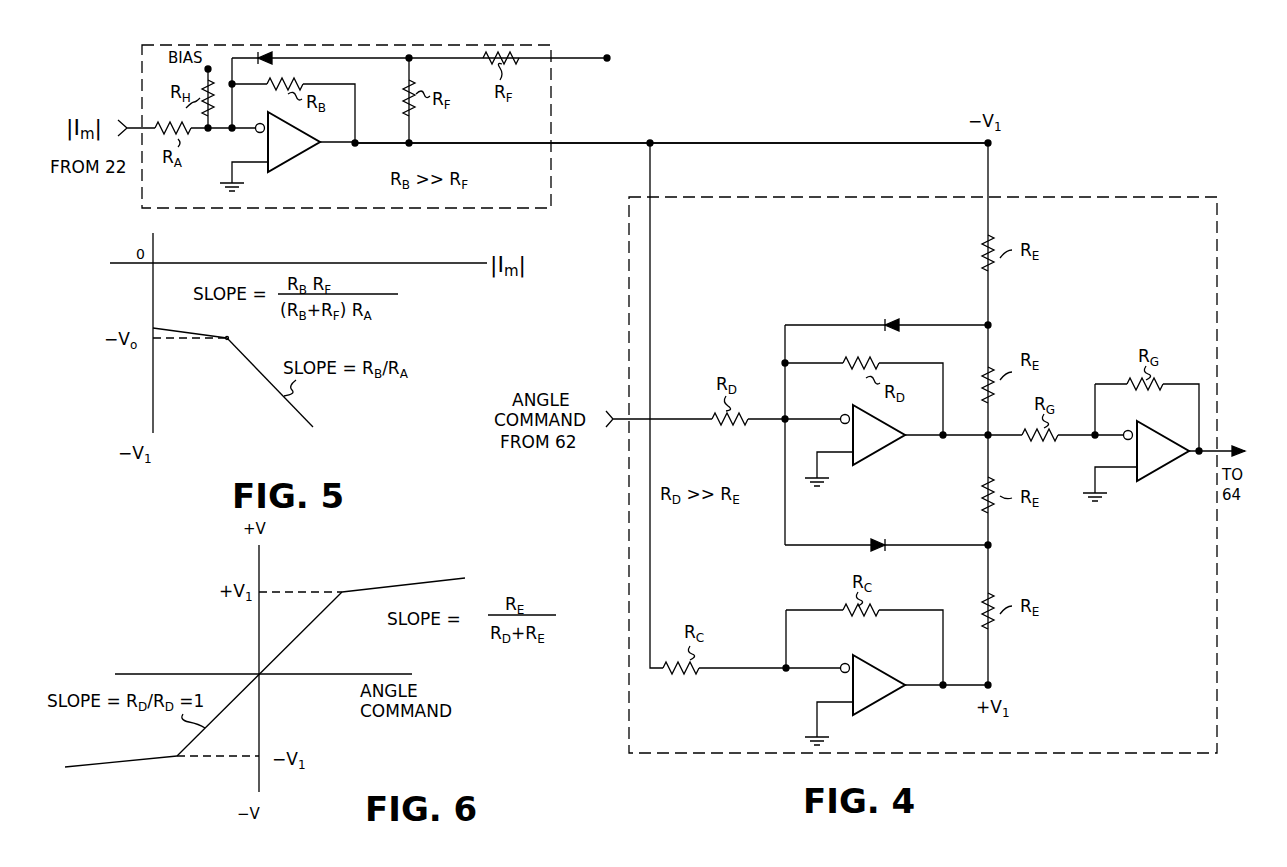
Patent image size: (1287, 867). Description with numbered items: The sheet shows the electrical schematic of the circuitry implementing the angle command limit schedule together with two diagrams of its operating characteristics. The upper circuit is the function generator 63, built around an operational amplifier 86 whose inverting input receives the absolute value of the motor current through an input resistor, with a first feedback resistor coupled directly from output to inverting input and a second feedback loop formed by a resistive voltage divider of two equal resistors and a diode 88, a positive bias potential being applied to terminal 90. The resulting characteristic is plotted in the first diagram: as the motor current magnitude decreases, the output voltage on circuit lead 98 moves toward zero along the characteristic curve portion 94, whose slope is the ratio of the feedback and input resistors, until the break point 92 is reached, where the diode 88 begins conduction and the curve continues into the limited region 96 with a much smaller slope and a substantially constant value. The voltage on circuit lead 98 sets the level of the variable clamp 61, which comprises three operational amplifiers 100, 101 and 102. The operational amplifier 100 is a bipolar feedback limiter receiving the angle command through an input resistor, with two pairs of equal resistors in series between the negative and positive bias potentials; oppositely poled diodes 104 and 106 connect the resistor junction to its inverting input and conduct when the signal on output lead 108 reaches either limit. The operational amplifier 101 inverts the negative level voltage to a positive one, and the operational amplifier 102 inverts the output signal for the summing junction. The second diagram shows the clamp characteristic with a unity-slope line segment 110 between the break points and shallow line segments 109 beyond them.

In FIG. 4, the variable clamp 61 is at (1130, 197).
In FIG. 4, the function generator 63 is at (551, 172).
In FIG. 4, the operational amplifier 86 is at (292, 165).
In FIG. 4, the diode 88 is at (268, 61).
In FIG. 4, the terminal 90 is at (607, 63).
In FIG. 5, the break point 92 is at (230, 339).
In FIG. 5, the characteristic curve portion 94 is at (303, 418).
In FIG. 5, the limited region 96 is at (177, 327).
In FIG. 4, the circuit lead 98 is at (518, 141).
In FIG. 4, the operational amplifier 100 is at (884, 466).
In FIG. 4, the operational amplifier 101 is at (897, 674).
In FIG. 4, the operational amplifier 102 is at (1163, 472).
In FIG. 4, the diode 104 is at (884, 320).
In FIG. 4, the diode 106 is at (890, 532).
In FIG. 4, the output lead 108 is at (950, 443).
In FIG. 6, the line segments 109 is at (400, 586).
In FIG. 6, the line segment 110 is at (312, 626).